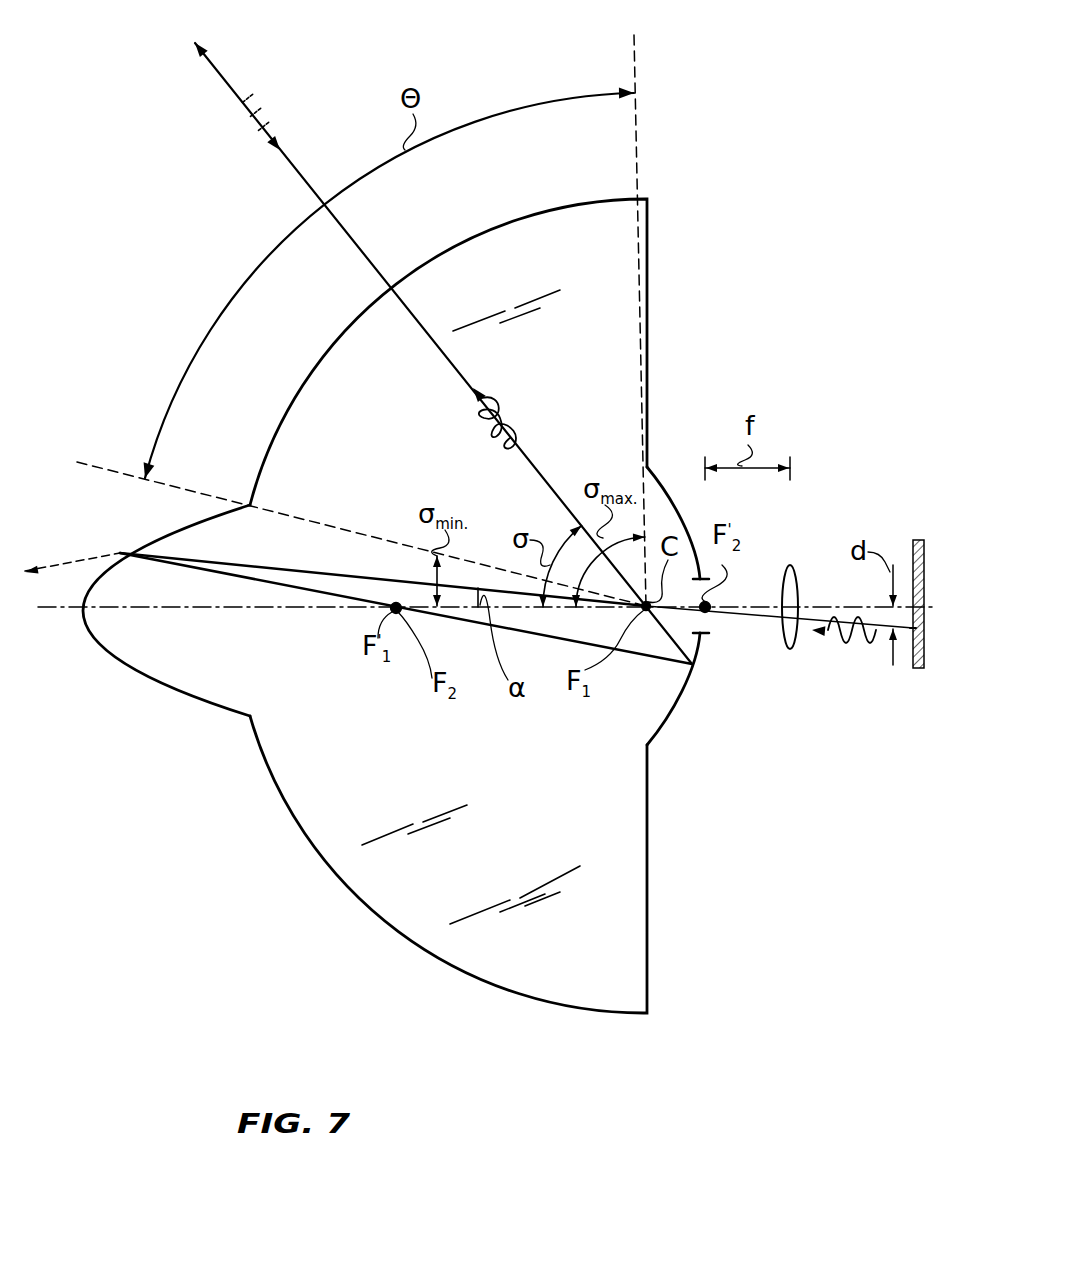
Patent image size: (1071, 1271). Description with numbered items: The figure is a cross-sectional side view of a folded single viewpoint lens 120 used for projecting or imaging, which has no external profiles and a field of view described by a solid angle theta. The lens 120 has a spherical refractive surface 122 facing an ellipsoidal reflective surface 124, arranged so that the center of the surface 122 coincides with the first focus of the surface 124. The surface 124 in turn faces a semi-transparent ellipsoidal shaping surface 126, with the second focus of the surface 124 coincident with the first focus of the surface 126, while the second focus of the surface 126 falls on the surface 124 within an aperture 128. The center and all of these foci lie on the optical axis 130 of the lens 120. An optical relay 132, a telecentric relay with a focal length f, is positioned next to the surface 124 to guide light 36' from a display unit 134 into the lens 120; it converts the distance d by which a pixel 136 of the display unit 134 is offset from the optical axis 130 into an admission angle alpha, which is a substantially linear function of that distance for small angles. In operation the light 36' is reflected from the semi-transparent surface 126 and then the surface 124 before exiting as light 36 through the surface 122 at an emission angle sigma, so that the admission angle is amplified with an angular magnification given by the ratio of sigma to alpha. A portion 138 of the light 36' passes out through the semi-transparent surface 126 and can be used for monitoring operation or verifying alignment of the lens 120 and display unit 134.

The light 36 is at (443, 353).
The light 36' is at (677, 544).
The folded single viewpoint lens 120 is at (150, 250).
The spherical refractive surface 122 is at (510, 222).
The ellipsoidal reflective surface 124 is at (677, 700).
The semi-transparent ellipsoidal shaping surface 126 is at (182, 712).
The aperture 128 is at (705, 636).
The optical axis 130 is at (45, 612).
The optical relay 132 is at (803, 555).
The display unit 134 is at (917, 540).
The pixel 136 is at (914, 637).
The portion of light 138 is at (78, 562).